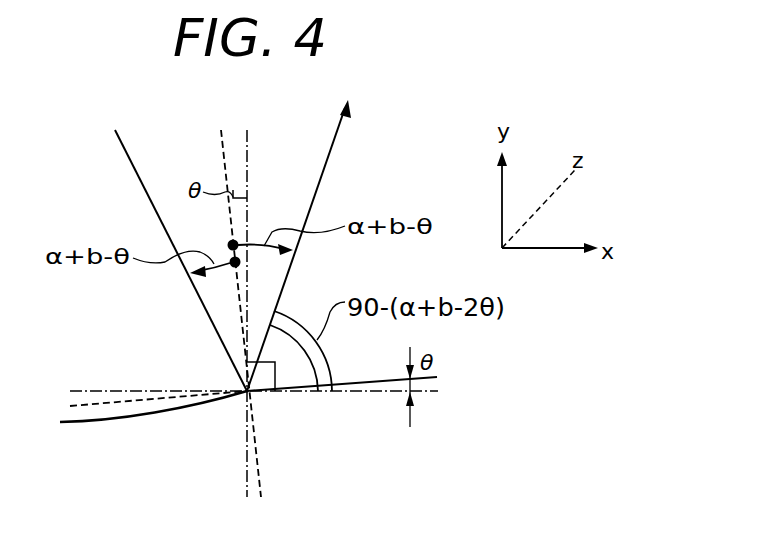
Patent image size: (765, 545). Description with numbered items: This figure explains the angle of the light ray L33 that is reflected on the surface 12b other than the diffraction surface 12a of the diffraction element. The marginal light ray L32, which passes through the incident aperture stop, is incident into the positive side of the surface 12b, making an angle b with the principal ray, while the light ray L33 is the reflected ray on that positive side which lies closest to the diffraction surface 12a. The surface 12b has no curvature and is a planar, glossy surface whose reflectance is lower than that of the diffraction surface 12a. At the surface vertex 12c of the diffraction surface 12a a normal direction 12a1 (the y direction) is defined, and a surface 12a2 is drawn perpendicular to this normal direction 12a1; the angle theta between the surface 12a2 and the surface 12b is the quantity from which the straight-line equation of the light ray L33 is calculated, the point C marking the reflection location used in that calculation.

The diffraction surface 12a is at (147, 417).
The normal direction 12a1 is at (247, 173).
The surface perpendicular to the normal direction 12a2 is at (428, 393).
The surface other than the diffraction surface 12b is at (360, 383).
The surface vertex 12c is at (245, 390).
The marginal light ray L32 is at (171, 245).
The light ray L33 is at (307, 229).
The point C is at (229, 418).